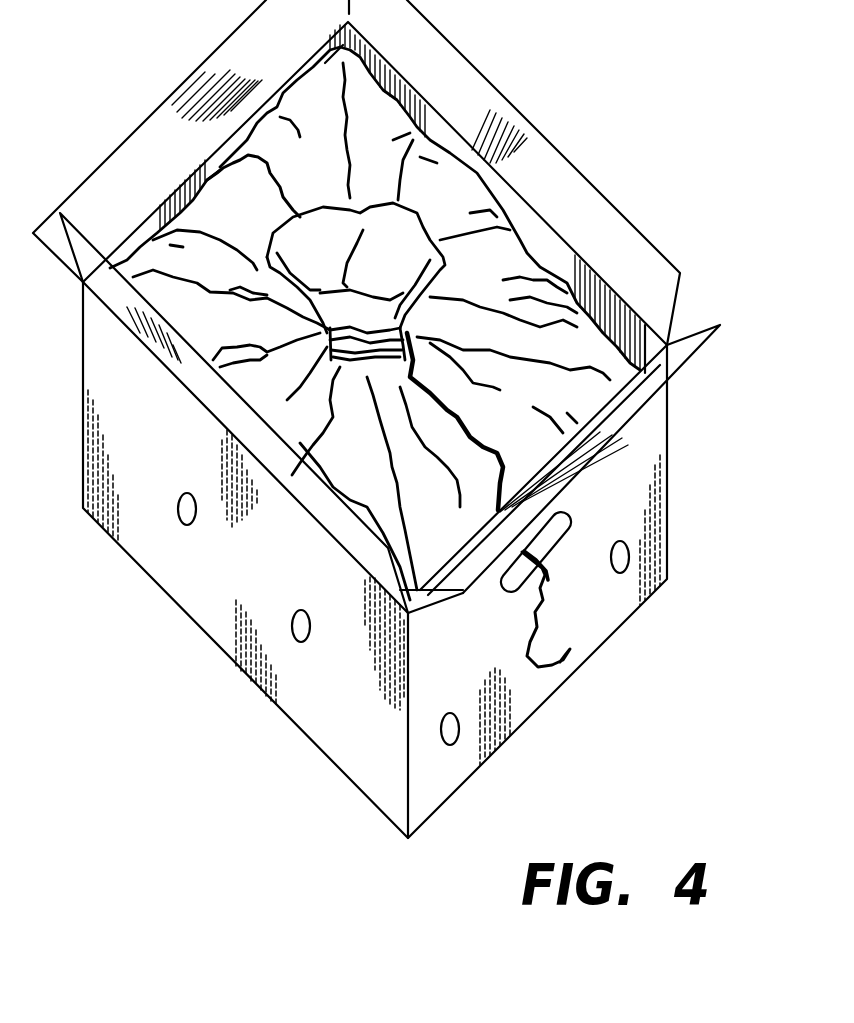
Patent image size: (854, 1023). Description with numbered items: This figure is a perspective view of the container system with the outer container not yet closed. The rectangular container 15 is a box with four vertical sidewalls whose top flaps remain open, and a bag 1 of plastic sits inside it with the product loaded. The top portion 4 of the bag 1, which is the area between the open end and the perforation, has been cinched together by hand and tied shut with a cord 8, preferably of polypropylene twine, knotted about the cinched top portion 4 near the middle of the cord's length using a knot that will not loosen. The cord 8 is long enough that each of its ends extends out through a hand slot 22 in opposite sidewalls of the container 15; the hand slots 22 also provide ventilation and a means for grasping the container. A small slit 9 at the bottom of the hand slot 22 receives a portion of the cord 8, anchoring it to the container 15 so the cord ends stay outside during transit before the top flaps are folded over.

The bag 1 is at (480, 293).
The top portion 4 is at (403, 253).
The cord 8 is at (280, 170).
The slit 9 is at (547, 575).
The container 15 is at (647, 466).
The hand slots 22 is at (568, 522).